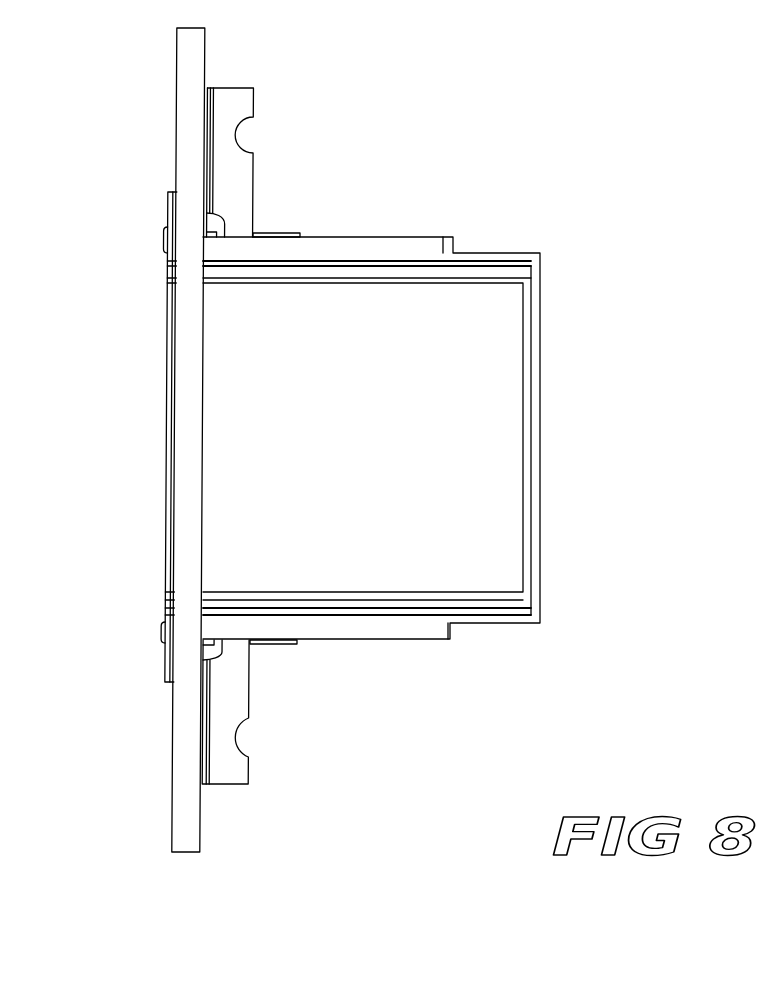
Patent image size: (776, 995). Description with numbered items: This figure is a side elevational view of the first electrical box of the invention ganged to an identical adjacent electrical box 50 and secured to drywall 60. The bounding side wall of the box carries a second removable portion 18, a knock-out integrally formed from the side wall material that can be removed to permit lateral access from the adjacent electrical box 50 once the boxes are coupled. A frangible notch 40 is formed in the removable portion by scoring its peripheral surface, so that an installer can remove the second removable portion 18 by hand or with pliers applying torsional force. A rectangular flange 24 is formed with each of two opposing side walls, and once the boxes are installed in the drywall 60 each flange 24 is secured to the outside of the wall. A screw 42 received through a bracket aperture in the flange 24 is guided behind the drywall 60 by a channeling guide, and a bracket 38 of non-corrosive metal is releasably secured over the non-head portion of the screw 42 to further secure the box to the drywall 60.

The drywall 60 is at (183, 72).
The bracket 38 is at (255, 98).
The screw 42 is at (268, 236).
The flange 24 is at (168, 210).
The adjacent electrical box 50 is at (598, 207).
The frangible notch 40 is at (392, 278).
The second removable portion 18 is at (357, 440).